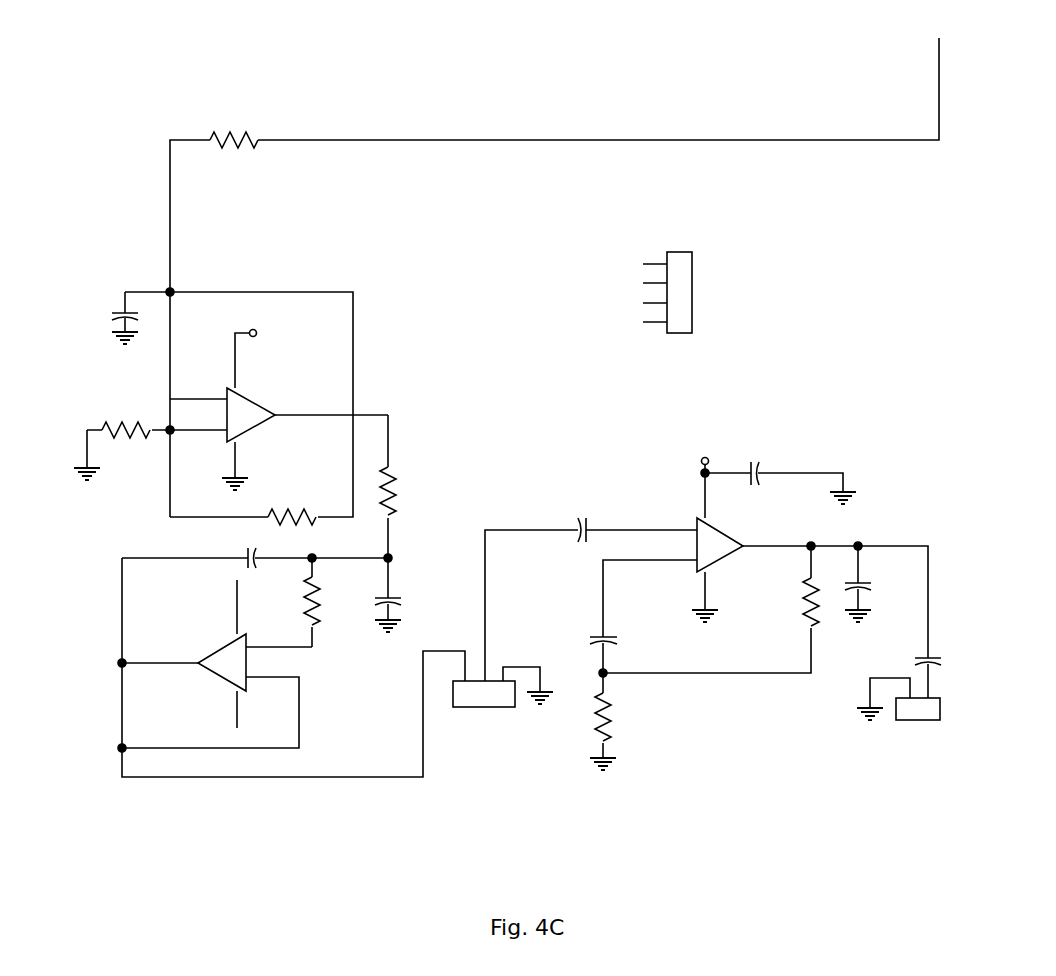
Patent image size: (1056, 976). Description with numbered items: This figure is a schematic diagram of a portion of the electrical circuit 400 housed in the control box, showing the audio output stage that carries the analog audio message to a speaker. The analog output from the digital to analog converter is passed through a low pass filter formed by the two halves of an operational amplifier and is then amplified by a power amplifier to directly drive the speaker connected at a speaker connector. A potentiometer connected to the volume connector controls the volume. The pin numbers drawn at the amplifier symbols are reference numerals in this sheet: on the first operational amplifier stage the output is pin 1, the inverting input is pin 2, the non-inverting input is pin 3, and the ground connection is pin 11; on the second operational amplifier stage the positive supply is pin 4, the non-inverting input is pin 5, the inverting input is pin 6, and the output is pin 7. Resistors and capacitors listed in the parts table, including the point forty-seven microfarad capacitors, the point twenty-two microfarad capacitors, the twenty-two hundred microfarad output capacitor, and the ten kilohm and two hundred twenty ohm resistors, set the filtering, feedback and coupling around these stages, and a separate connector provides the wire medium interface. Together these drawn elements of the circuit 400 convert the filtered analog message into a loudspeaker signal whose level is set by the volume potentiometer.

The electrical circuit 400 is at (122, 180).
The op-amp output pin 1 is at (331, 404).
The op-amp inverting input pin 2 is at (198, 422).
The op-amp non-inverting input pin 3 is at (198, 392).
The op-amp supply pin 4 is at (243, 607).
The op-amp non-inverting input pin 5 is at (279, 640).
The op-amp inverting input pin 6 is at (210, 705).
The op-amp output pin 7 is at (160, 655).
The op-amp ground pin 11 is at (241, 466).